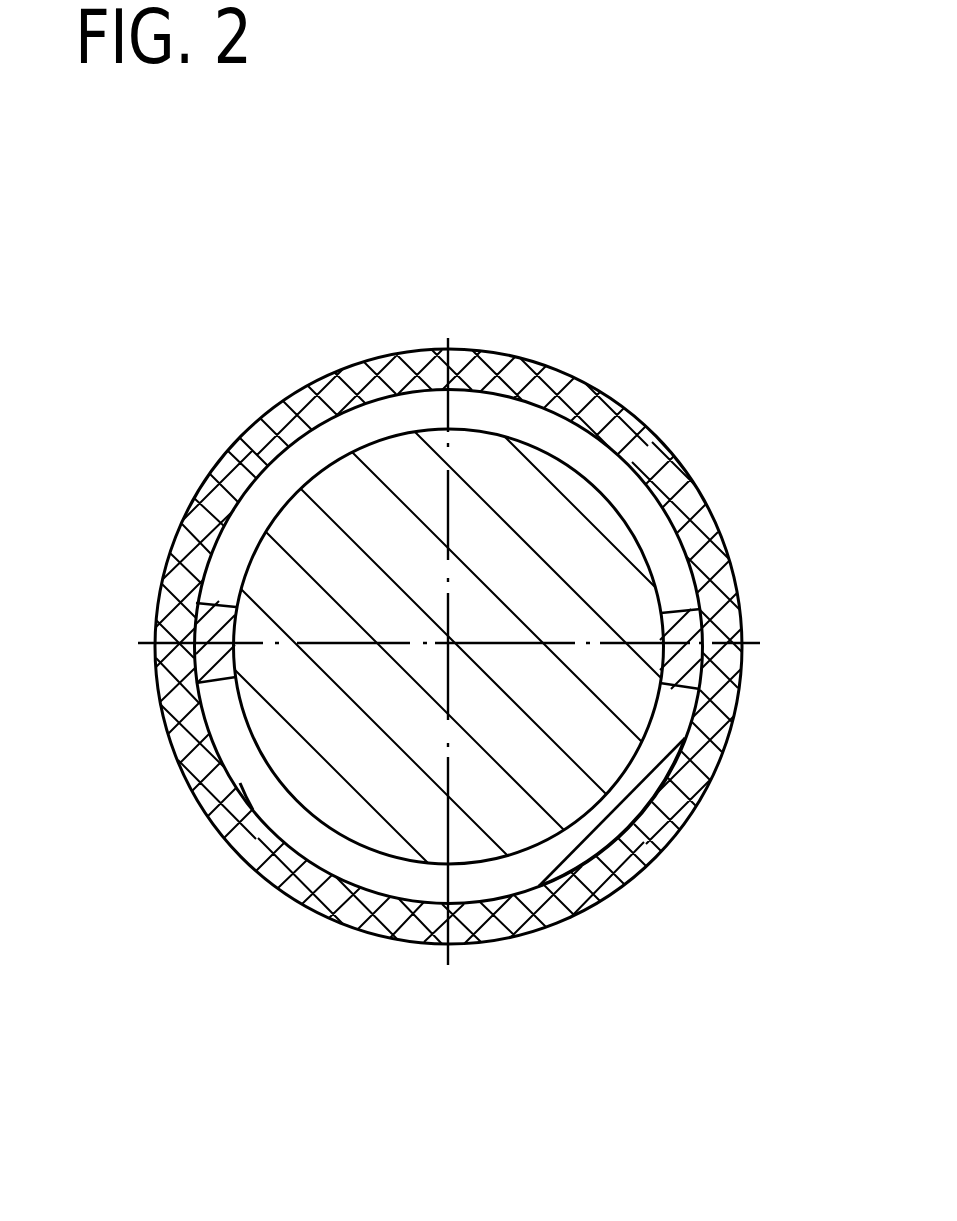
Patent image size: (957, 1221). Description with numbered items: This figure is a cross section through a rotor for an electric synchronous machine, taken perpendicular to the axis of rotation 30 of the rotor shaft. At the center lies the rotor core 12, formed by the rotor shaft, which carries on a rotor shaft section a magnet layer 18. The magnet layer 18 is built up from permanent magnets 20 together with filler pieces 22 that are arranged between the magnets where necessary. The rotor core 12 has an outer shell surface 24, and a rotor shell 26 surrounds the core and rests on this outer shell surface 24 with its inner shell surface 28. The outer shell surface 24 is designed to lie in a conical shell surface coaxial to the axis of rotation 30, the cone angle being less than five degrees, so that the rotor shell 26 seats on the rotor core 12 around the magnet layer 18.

The rotor core 12 is at (380, 776).
The magnet layer 18 is at (662, 775).
The permanent magnets 20 is at (557, 430).
The filler pieces 22 is at (718, 626).
The outer shell surface 24 is at (182, 727).
The rotor shell 26 is at (212, 466).
The inner shell surface 28 is at (243, 800).
The axis of rotation 30 is at (450, 640).